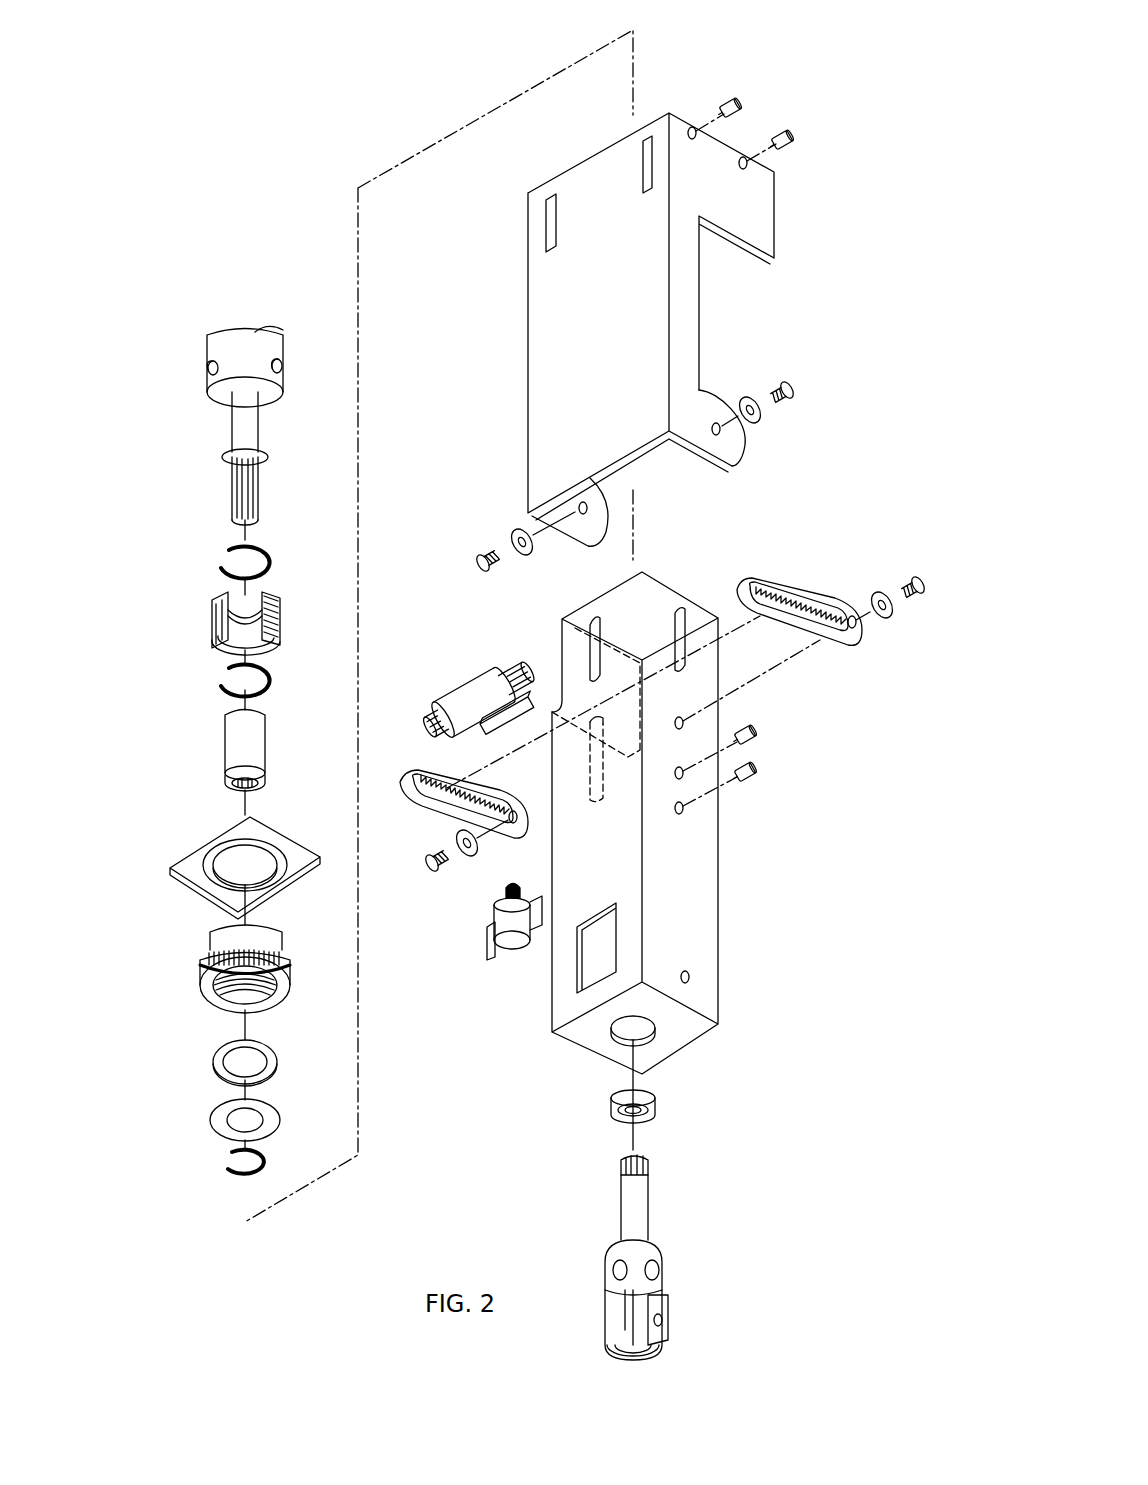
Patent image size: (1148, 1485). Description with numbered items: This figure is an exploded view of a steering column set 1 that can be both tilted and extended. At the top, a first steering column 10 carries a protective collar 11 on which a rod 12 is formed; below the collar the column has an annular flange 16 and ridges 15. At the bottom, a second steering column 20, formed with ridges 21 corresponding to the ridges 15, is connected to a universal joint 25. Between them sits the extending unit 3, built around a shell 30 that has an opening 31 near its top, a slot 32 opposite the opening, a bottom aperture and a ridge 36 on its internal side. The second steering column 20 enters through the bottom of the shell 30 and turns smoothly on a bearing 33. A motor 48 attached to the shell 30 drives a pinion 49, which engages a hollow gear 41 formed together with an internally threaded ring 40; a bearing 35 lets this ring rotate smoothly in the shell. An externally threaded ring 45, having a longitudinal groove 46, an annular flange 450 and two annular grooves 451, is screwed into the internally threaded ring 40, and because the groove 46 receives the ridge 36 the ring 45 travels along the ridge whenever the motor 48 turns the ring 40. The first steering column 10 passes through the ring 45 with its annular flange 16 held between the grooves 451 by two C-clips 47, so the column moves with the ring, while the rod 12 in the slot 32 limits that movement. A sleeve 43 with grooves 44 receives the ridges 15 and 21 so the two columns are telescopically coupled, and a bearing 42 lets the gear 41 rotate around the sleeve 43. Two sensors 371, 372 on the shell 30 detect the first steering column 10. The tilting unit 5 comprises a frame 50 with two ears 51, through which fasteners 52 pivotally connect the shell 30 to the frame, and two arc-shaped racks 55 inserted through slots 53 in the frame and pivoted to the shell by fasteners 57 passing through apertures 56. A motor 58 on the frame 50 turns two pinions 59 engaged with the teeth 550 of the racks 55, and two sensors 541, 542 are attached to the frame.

The steering column set 1 is at (219, 411).
The first steering column 10 is at (238, 433).
The protective collar 11 is at (213, 346).
The rod 12 is at (283, 360).
The ridges 15 is at (238, 500).
The annular flange 16 is at (230, 462).
The second steering column 20 is at (695, 1190).
The ridges 21 is at (650, 1168).
The universal joint 25 is at (672, 1291).
The extending unit 3 is at (650, 795).
The shell 30 is at (720, 855).
The opening 31 is at (560, 660).
The slot 32 is at (680, 625).
The bearing 33 is at (657, 1105).
The bearing 35 is at (285, 880).
The ridge 36 is at (590, 762).
The sensor 371 is at (755, 733).
The sensor 372 is at (755, 770).
The internally threaded ring 40 is at (202, 966).
The gear 41 is at (213, 982).
The bearing 42 is at (215, 1065).
The sleeve 43 is at (232, 732).
The grooves 44 is at (235, 782).
The externally threaded ring 45 is at (250, 599).
The annular flange 450 is at (275, 598).
The annular grooves 451 is at (240, 600).
The longitudinal groove 46 is at (215, 618).
The C-clips 47 is at (262, 558).
The motor 48 is at (490, 938).
The pinion 49 is at (494, 915).
The tilting unit 5 is at (664, 314).
The frame 50 is at (540, 316).
The ears 51 is at (740, 455).
The fastener 52 is at (800, 385).
The slots 53 is at (645, 160).
The sensor 541 is at (787, 137).
The sensor 542 is at (735, 104).
The racks 55 is at (653, 719).
The teeth 550 is at (815, 600).
The aperture 56 is at (852, 617).
The fastener 57 is at (916, 580).
The motor 58 is at (457, 670).
The pinions 59 is at (525, 668).